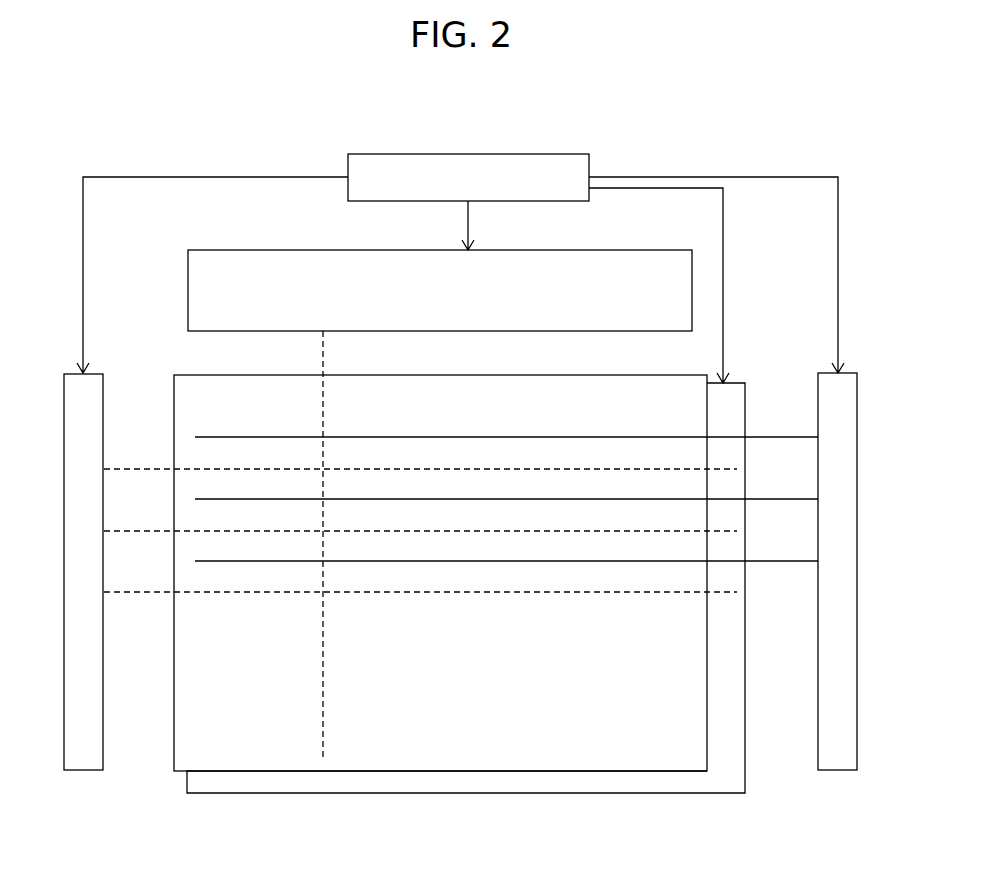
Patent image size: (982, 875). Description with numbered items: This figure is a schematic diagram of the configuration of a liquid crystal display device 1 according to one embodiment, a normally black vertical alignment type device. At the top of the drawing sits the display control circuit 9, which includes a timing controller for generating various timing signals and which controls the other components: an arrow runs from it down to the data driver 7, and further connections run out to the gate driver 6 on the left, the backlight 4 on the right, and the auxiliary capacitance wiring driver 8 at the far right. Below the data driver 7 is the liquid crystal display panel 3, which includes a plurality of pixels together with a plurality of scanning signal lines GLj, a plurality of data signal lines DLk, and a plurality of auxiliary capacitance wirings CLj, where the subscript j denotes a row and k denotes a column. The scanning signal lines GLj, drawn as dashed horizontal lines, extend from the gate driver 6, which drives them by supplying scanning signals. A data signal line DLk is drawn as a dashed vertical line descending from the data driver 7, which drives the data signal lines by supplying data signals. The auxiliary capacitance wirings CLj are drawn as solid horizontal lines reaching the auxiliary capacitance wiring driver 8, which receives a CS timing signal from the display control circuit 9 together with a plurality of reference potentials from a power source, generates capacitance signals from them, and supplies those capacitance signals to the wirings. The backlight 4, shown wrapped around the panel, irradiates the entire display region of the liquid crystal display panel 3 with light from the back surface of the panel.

The liquid crystal display device 1 is at (551, 117).
The display control circuit 9 is at (469, 153).
The data driver 7 is at (678, 250).
The liquid crystal display panel 3 is at (683, 376).
The backlight 4 is at (746, 398).
The gate driver 6 is at (85, 771).
The auxiliary capacitance wiring driver 8 is at (838, 771).
The data signal line DLk is at (321, 416).
The scanning signal line GLj is at (122, 471).
The auxiliary capacitance wiring CLj is at (778, 439).